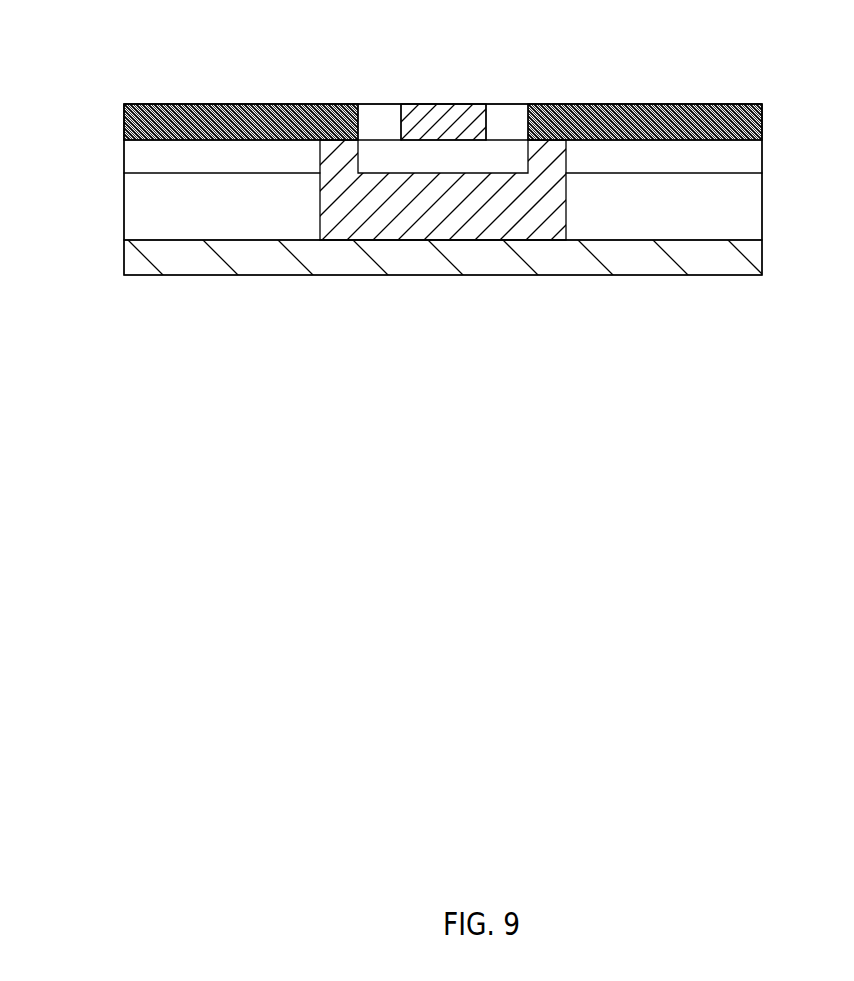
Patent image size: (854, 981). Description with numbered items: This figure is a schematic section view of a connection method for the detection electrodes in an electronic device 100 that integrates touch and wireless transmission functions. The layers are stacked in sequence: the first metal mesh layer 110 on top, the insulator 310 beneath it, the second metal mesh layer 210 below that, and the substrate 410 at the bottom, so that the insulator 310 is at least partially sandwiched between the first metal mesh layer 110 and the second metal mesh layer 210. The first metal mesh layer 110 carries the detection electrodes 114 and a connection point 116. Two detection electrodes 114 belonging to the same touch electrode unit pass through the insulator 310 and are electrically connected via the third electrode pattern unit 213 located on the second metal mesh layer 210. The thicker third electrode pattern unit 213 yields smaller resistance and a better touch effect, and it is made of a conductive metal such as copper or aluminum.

The electronic device 100 is at (134, 31).
The first metal mesh layer 110 is at (124, 116).
The detection electrode 114 is at (202, 104).
The connection point 116 is at (438, 104).
The second metal mesh layer 210 is at (130, 205).
The third electrode pattern unit 213 is at (425, 214).
The insulator 310 is at (130, 155).
The substrate 410 is at (130, 255).